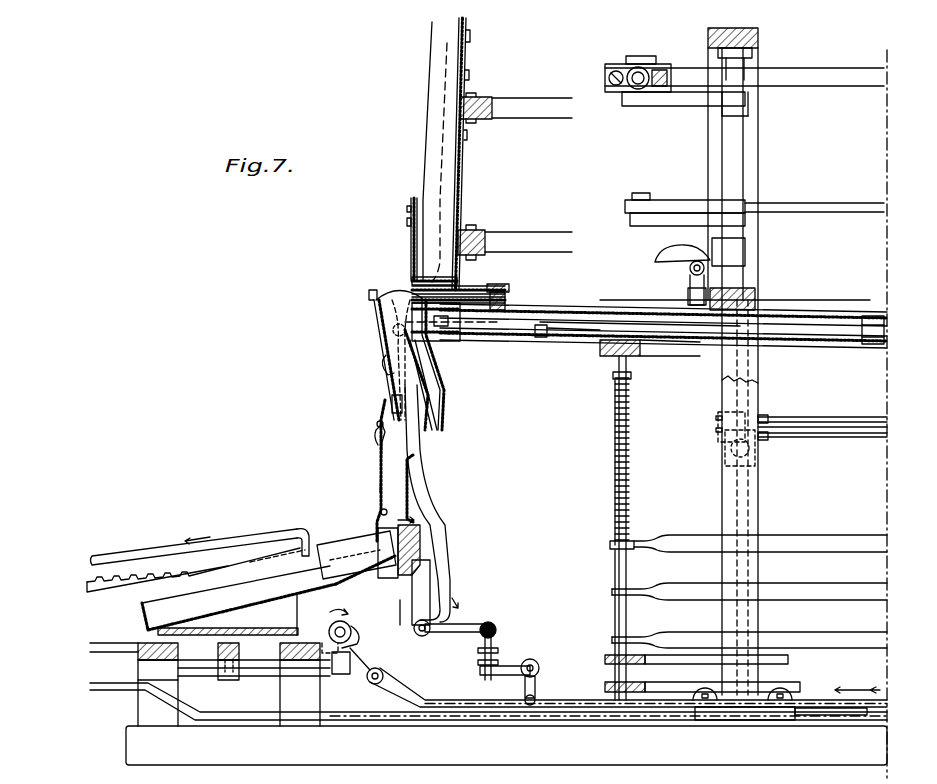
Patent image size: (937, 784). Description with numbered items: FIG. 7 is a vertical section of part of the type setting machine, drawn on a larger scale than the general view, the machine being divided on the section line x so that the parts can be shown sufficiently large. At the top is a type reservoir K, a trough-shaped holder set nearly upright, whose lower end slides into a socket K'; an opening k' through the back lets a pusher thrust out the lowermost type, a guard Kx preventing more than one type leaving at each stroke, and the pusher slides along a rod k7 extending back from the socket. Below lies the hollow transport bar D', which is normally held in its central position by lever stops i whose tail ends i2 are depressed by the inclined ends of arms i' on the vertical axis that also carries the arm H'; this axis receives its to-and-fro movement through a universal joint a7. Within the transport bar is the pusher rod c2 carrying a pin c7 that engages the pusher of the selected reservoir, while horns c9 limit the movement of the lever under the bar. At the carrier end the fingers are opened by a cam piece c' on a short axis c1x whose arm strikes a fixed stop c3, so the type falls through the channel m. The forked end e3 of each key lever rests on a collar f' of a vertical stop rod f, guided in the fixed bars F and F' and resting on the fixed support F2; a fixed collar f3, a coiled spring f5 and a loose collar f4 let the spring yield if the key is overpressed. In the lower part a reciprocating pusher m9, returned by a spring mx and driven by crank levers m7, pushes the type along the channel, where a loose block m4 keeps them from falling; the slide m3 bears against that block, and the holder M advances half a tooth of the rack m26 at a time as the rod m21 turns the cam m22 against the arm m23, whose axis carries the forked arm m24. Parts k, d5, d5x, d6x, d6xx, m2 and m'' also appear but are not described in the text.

The section line x is at (874, 408).
The standard k is at (733, 361).
The universal joint a7 is at (655, 75).
The arm H' is at (752, 222).
The arm with inclined end i' is at (700, 243).
The tail end of stop lever i2 is at (690, 268).
The lever stop i is at (713, 292).
The transport bar D' is at (663, 340).
The bar d5 is at (645, 290).
The pusher rod c2 is at (655, 324).
The fixed bar F is at (637, 362).
The stop rod f is at (630, 528).
The fixed collar f3 is at (631, 376).
The coiled spring f5 is at (615, 452).
The loose collar f4 is at (610, 546).
The collar f' is at (600, 625).
The forked end of key lever e3 is at (658, 535).
The fixed bar F' is at (682, 658).
The fixed support F2 is at (604, 688).
The guide d6x is at (740, 396).
The clip d6xx is at (768, 415).
The bar d5x is at (840, 417).
The type reservoir K is at (425, 152).
The socket K' is at (473, 154).
The guard Kx is at (410, 282).
The rod k7 is at (492, 198).
The pin c7 is at (509, 295).
The opening k' is at (452, 334).
The horn c9 is at (540, 337).
The fixed stop c3 is at (425, 405).
The cam piece c' is at (408, 360).
The short axis c1x is at (408, 390).
The channel m is at (416, 503).
The reciprocating pusher m9 is at (400, 520).
The holder M is at (279, 535).
The slide m3 is at (132, 560).
The tray m2 is at (211, 589).
The rack m26 is at (240, 628).
The loose block m4 is at (356, 557).
The spring mx is at (388, 578).
The cam m22 is at (352, 640).
The arm m23 is at (340, 676).
The rod m21 is at (440, 700).
The crank lever m7 is at (512, 654).
The rod m'' is at (488, 724).
The forked arm m24 is at (225, 680).